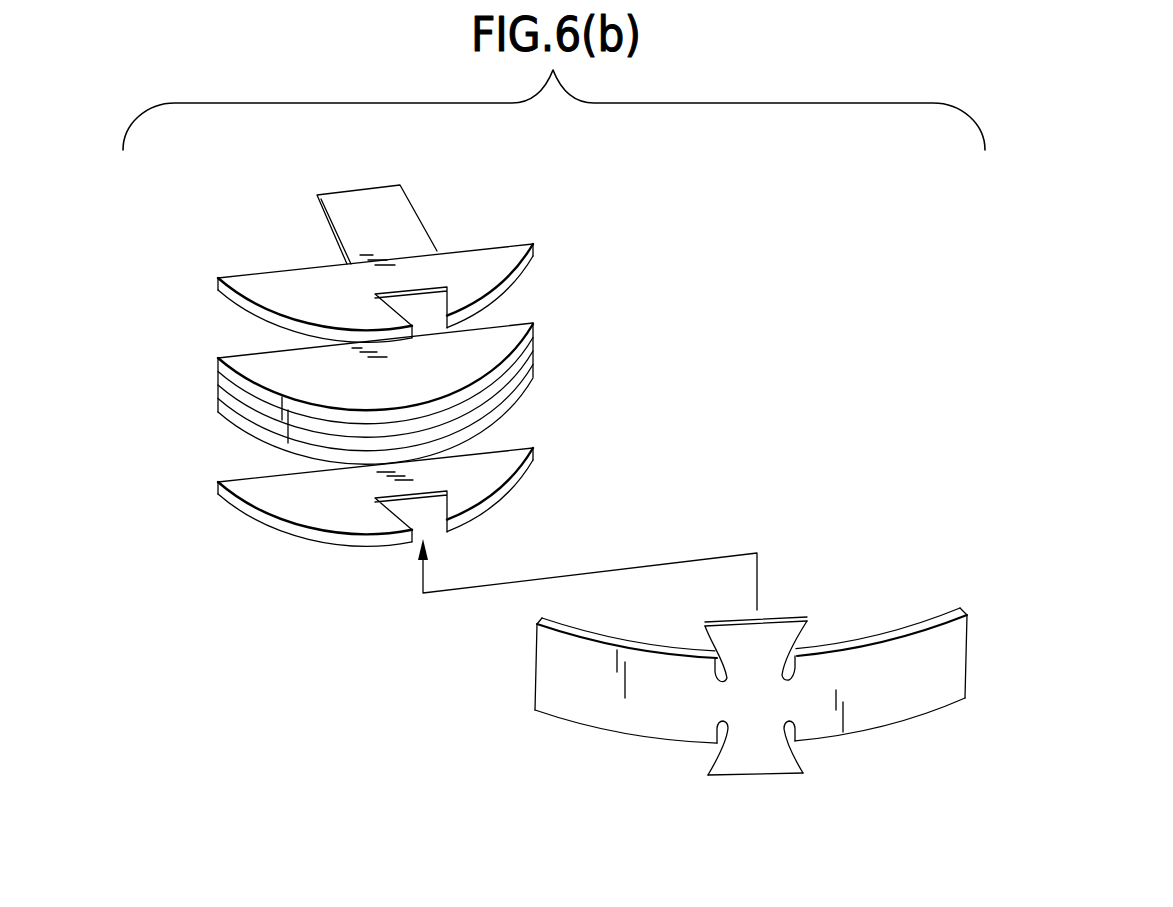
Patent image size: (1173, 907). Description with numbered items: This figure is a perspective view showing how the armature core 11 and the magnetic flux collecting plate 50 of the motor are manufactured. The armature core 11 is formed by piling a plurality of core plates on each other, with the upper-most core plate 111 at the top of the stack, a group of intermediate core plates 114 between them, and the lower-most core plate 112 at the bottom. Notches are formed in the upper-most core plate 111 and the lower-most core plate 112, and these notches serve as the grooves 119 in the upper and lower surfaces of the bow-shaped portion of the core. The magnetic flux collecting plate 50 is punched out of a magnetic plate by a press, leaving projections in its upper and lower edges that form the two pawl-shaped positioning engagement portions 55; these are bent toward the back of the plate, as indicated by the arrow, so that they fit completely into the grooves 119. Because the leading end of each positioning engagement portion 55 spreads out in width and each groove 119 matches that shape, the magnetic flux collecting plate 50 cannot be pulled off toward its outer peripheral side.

The armature core 11 is at (254, 207).
The upper-most core plate 111 is at (500, 250).
The lower-most core plate 112 is at (528, 447).
The laminated core sheets 114 is at (207, 263).
The groove 119 is at (393, 297).
The magnetic flux collecting plate 50 is at (886, 575).
The positioning engagement portion 55 is at (777, 643).